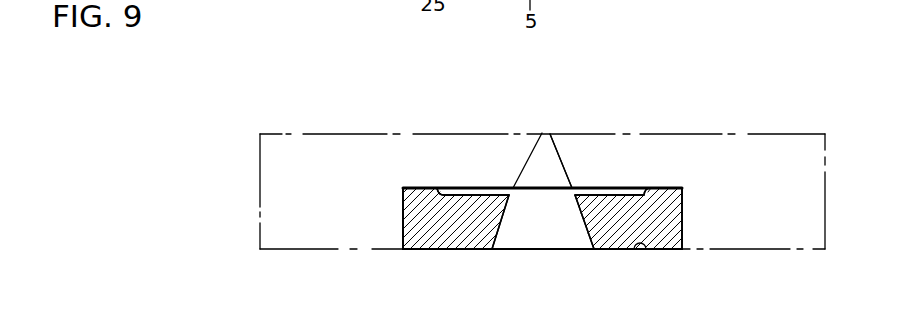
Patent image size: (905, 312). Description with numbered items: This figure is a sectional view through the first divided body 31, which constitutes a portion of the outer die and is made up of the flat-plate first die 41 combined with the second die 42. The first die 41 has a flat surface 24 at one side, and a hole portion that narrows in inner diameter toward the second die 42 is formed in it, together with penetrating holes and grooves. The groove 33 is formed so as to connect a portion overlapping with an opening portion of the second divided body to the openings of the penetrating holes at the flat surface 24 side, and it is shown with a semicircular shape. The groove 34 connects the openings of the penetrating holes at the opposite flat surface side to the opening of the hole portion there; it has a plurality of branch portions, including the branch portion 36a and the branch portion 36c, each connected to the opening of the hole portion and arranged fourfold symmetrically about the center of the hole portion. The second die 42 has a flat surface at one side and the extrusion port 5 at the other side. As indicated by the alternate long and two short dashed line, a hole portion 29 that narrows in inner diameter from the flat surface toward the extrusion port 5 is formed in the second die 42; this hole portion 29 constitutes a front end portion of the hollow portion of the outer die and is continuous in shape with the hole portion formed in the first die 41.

The first divided body 31 is at (255, 92).
The second die 42 is at (775, 134).
The flat surface 24 is at (413, 188).
The branch portion 36c is at (477, 188).
The branch portion 36a is at (588, 187).
The groove 34 is at (633, 188).
The first die 41 is at (420, 250).
The extrusion port 5 is at (542, 132).
The hole portion 29 is at (561, 137).
The groove 33 is at (637, 253).